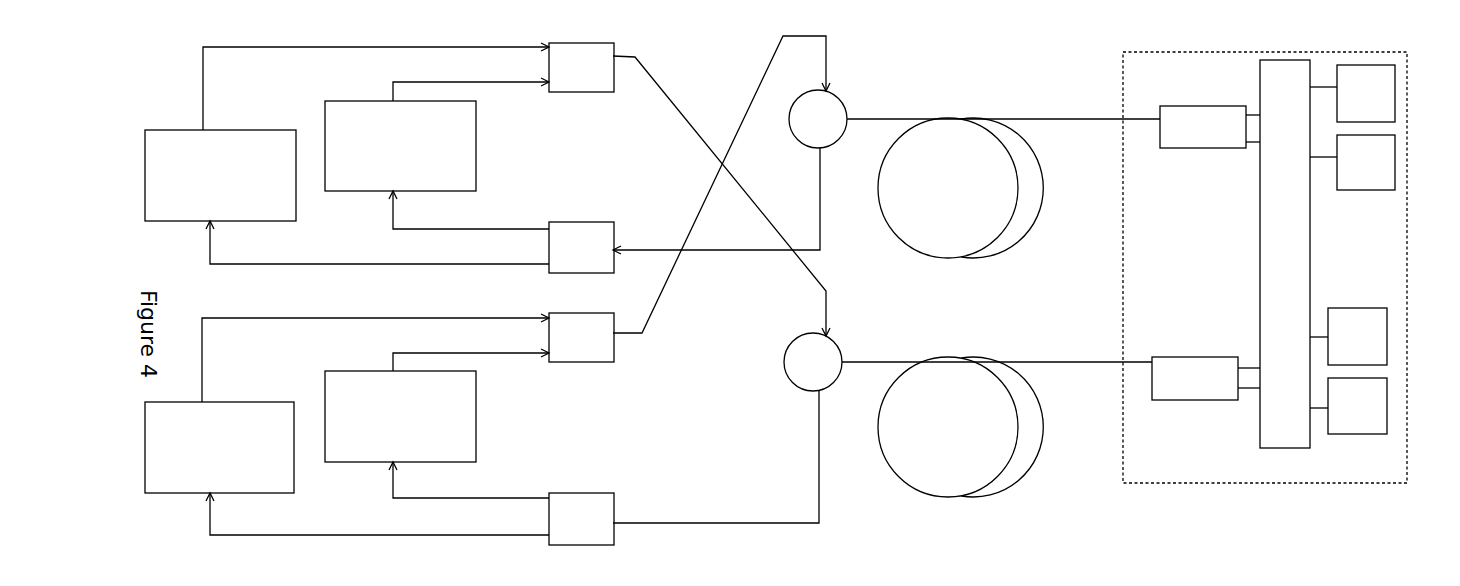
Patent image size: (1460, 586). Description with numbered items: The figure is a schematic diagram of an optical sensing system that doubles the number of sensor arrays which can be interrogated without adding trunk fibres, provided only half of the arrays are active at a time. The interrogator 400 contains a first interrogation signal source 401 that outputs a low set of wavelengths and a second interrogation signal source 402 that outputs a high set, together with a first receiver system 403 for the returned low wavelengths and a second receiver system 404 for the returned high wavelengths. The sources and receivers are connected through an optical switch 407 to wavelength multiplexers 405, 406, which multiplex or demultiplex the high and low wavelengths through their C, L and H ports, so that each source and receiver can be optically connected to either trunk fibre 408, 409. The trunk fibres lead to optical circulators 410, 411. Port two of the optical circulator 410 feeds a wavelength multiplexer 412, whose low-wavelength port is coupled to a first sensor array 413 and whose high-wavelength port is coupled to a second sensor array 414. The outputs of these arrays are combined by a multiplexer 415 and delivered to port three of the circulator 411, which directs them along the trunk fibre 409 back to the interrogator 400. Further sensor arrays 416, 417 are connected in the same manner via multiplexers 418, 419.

The interrogator 400 is at (1265, 267).
The first interrogation signal source 401 is at (1366, 93).
The second interrogation signal source 402 is at (1357, 336).
The first receiver system 403 is at (1366, 162).
The second receiver system 404 is at (1357, 406).
The wavelength multiplexer 405 is at (1203, 127).
The wavelength multiplexer 406 is at (1195, 378).
The optical switch 407 is at (1285, 254).
The trunk fibre 408 is at (960, 188).
The trunk fibre 409 is at (960, 427).
The optical circulator 410 is at (823, 118).
The optical circulator 411 is at (817, 360).
The wavelength multiplexer 412 is at (581, 247).
The first sensor array 413 is at (400, 146).
The second sensor array 414 is at (220, 175).
The multiplexer 415 is at (581, 67).
The sensor array 416 is at (400, 416).
The sensor array 417 is at (219, 447).
The multiplexer 418 is at (581, 337).
The multiplexer 419 is at (581, 519).